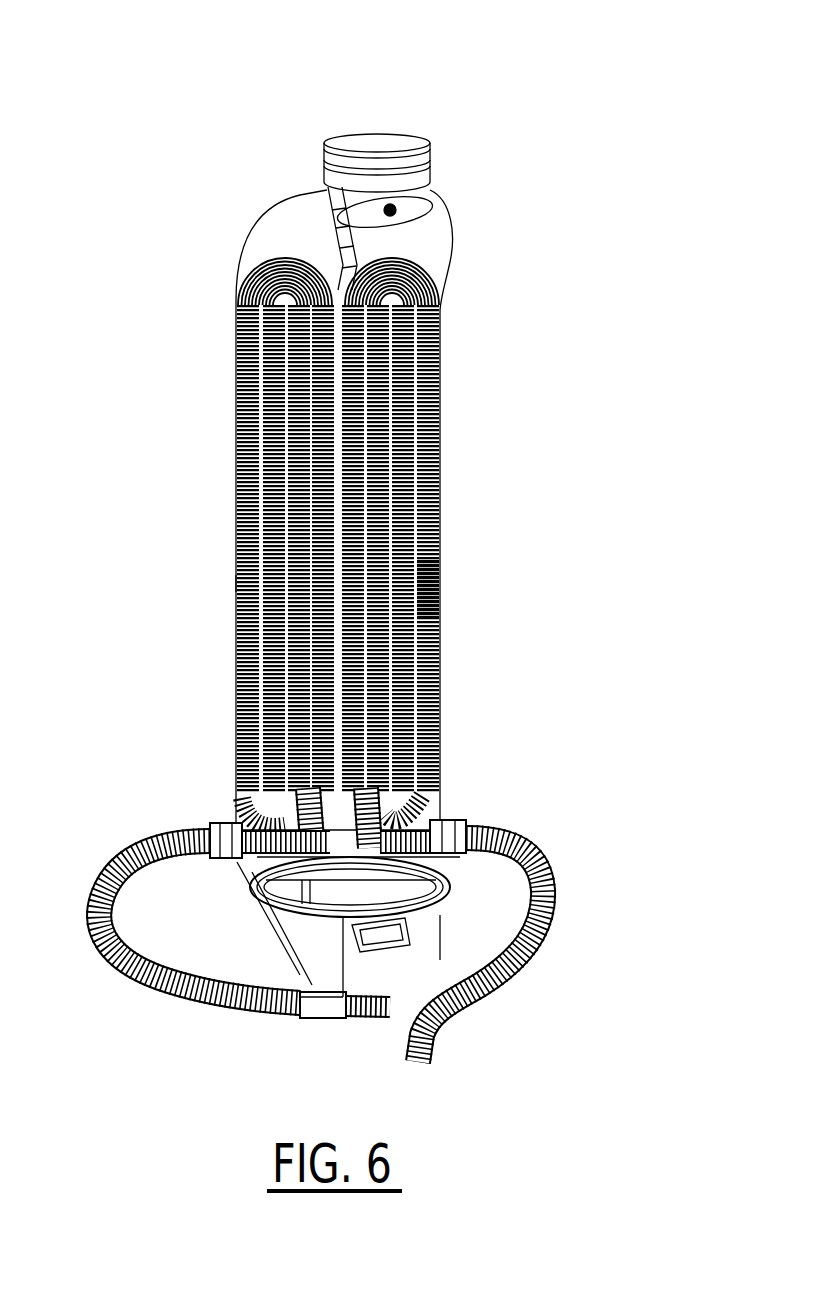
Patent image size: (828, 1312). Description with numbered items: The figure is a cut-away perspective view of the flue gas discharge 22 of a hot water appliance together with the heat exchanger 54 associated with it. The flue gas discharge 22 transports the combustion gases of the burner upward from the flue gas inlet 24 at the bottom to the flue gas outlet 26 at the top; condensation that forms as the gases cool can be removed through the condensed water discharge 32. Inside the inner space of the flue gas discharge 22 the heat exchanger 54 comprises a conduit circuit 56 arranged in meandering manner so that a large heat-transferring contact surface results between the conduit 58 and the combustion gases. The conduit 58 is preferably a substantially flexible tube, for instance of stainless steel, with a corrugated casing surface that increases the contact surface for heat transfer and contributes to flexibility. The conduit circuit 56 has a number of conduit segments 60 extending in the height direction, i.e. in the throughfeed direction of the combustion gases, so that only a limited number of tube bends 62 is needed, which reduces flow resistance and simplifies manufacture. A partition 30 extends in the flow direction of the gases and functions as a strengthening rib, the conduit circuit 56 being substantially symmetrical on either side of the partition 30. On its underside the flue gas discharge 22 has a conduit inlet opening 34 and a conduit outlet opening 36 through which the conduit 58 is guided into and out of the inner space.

The flue gas discharge 22 is at (437, 457).
The flue gas inlet 24 is at (397, 889).
The flue gas outlet 26 is at (372, 100).
The partition 30 is at (343, 265).
The condensed water discharge 32 is at (282, 265).
The conduit inlet opening 34 is at (465, 790).
The conduit outlet opening 36 is at (220, 843).
The heat exchanger 54 is at (220, 583).
The conduit circuit 56 is at (425, 592).
The conduit 58 is at (522, 933).
The conduit segments 60 is at (248, 625).
The tube bends 62 is at (393, 285).